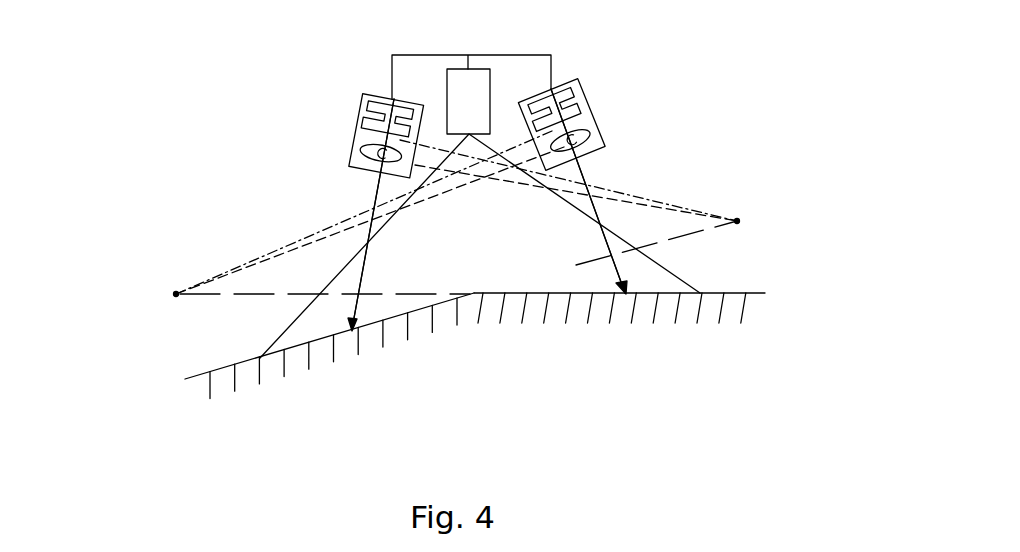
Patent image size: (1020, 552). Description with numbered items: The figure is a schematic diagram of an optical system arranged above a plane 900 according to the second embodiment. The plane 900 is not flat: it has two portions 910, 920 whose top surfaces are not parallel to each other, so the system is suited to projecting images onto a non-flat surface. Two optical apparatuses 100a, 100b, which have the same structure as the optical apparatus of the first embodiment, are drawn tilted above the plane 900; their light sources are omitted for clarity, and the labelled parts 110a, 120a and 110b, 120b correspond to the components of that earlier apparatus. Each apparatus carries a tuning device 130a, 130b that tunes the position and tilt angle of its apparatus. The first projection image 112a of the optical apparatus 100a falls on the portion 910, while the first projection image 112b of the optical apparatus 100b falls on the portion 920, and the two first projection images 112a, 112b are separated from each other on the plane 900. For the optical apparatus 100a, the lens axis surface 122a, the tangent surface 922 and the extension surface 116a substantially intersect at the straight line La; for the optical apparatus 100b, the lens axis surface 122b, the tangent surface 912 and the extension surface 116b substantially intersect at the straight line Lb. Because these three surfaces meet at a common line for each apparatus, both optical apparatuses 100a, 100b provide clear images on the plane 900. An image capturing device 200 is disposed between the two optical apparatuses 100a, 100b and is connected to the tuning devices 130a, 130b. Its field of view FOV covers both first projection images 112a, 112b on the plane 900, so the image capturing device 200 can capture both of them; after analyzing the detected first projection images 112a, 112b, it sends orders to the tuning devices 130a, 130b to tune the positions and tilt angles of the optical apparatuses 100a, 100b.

The image capturing device 200 is at (457, 80).
The field of view FOV is at (493, 149).
The optical apparatus 100a is at (302, 203).
The first image sensor 110a is at (388, 100).
The first light source 120a is at (381, 153).
The tuning device 130a is at (387, 118).
The optical apparatus 100b is at (640, 176).
The second image sensor 110b is at (588, 191).
The second light source 120b is at (570, 140).
The tuning device 130b is at (553, 110).
The first projection image 112a is at (365, 268).
The first projection image 112b is at (603, 235).
The lens axis surface 122a is at (622, 194).
The lens axis surface 122b is at (288, 248).
The extension surface 116a is at (657, 204).
The extension surface 116b is at (241, 266).
The straight line La is at (741, 224).
The straight line Lb is at (173, 294).
The plane 900 is at (475, 382).
The portion 910 is at (352, 340).
The portion 920 is at (619, 354).
The tangent surface 912 is at (223, 294).
The tangent surface 922 is at (678, 239).